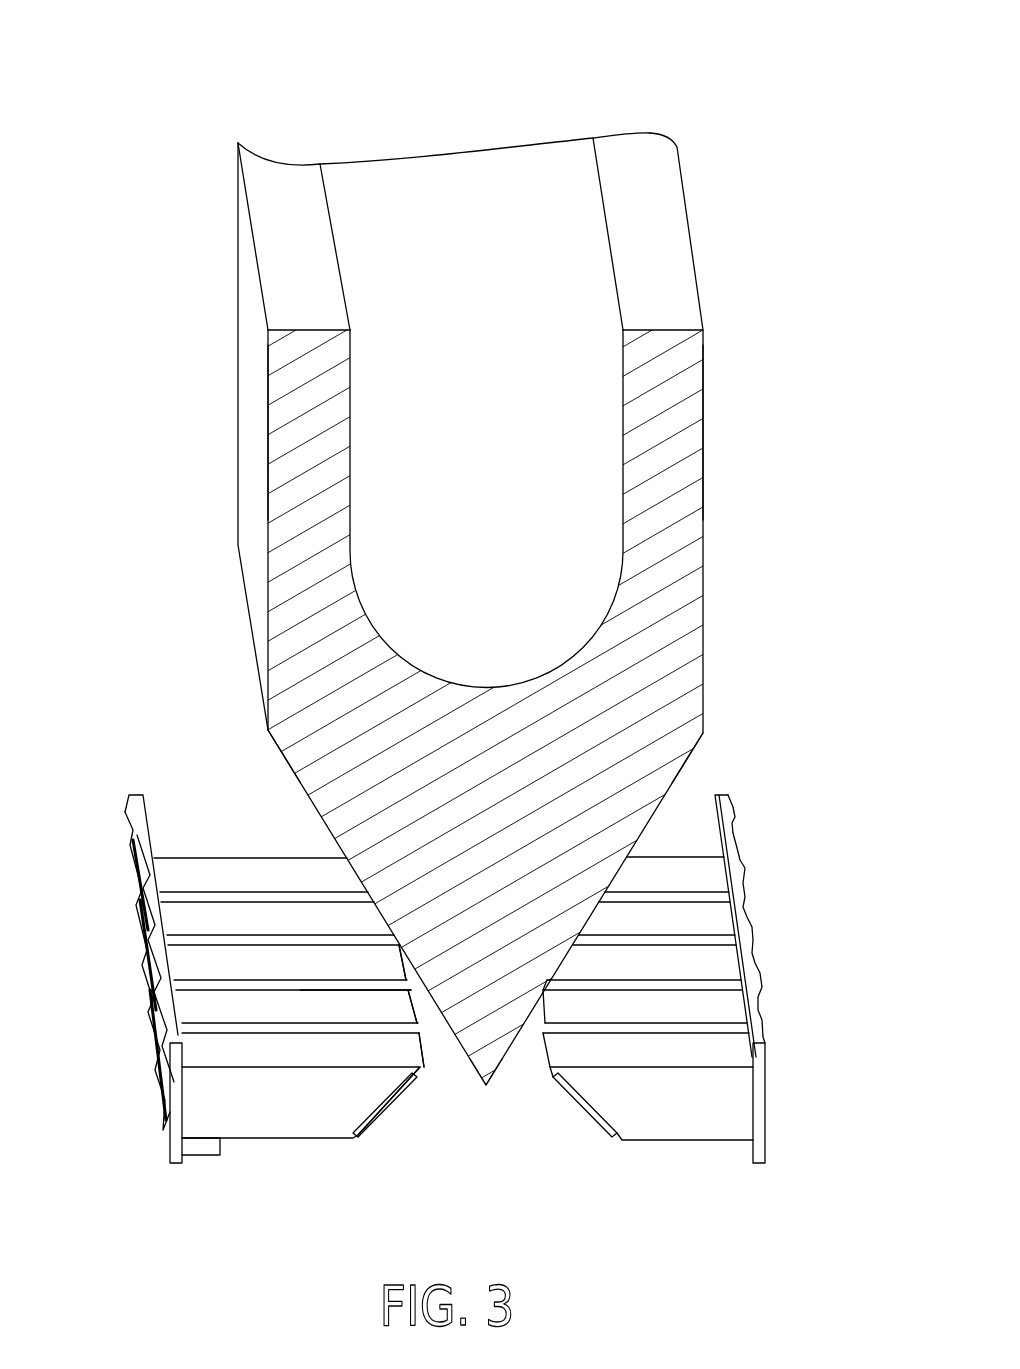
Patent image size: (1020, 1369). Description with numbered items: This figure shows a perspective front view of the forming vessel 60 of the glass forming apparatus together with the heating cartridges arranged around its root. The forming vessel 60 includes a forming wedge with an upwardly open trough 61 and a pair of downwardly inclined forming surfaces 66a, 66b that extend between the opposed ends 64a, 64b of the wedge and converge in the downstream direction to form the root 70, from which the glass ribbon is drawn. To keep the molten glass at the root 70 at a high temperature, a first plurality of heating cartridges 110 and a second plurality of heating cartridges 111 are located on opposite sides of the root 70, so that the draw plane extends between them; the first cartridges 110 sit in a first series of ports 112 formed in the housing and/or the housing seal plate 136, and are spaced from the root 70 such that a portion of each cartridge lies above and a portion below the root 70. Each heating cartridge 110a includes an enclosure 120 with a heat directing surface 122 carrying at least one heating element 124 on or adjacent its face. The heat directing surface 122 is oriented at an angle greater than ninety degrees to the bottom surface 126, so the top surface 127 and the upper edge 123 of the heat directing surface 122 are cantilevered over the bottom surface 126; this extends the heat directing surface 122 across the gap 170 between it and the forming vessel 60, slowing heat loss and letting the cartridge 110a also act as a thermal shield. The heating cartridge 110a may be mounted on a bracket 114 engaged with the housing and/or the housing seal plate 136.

The forming vessel 60 is at (640, 94).
The trough 61 is at (488, 201).
The end of the forming wedge 64a is at (268, 425).
The end of the forming wedge 64b is at (704, 432).
The downwardly inclined forming surface 66a is at (270, 746).
The downwardly inclined forming surface 66b is at (705, 739).
The root 70 is at (488, 1088).
The first plurality of heating cartridges 110 is at (280, 957).
The heating cartridge 110a is at (281, 1020).
The second plurality of heating cartridges 111 is at (705, 884).
The first series of ports 112 is at (146, 975).
The bracket 114 is at (207, 1157).
The enclosure 120 is at (392, 1034).
The heat directing surface 122 is at (412, 1114).
The upper edge of the heat directing surface 123 is at (440, 1046).
The heating element 124 is at (388, 1120).
The bottom surface 126 is at (245, 1141).
The top surface 127 is at (333, 1055).
The housing seal plate 136 is at (158, 1138).
The gap 170 is at (425, 1080).